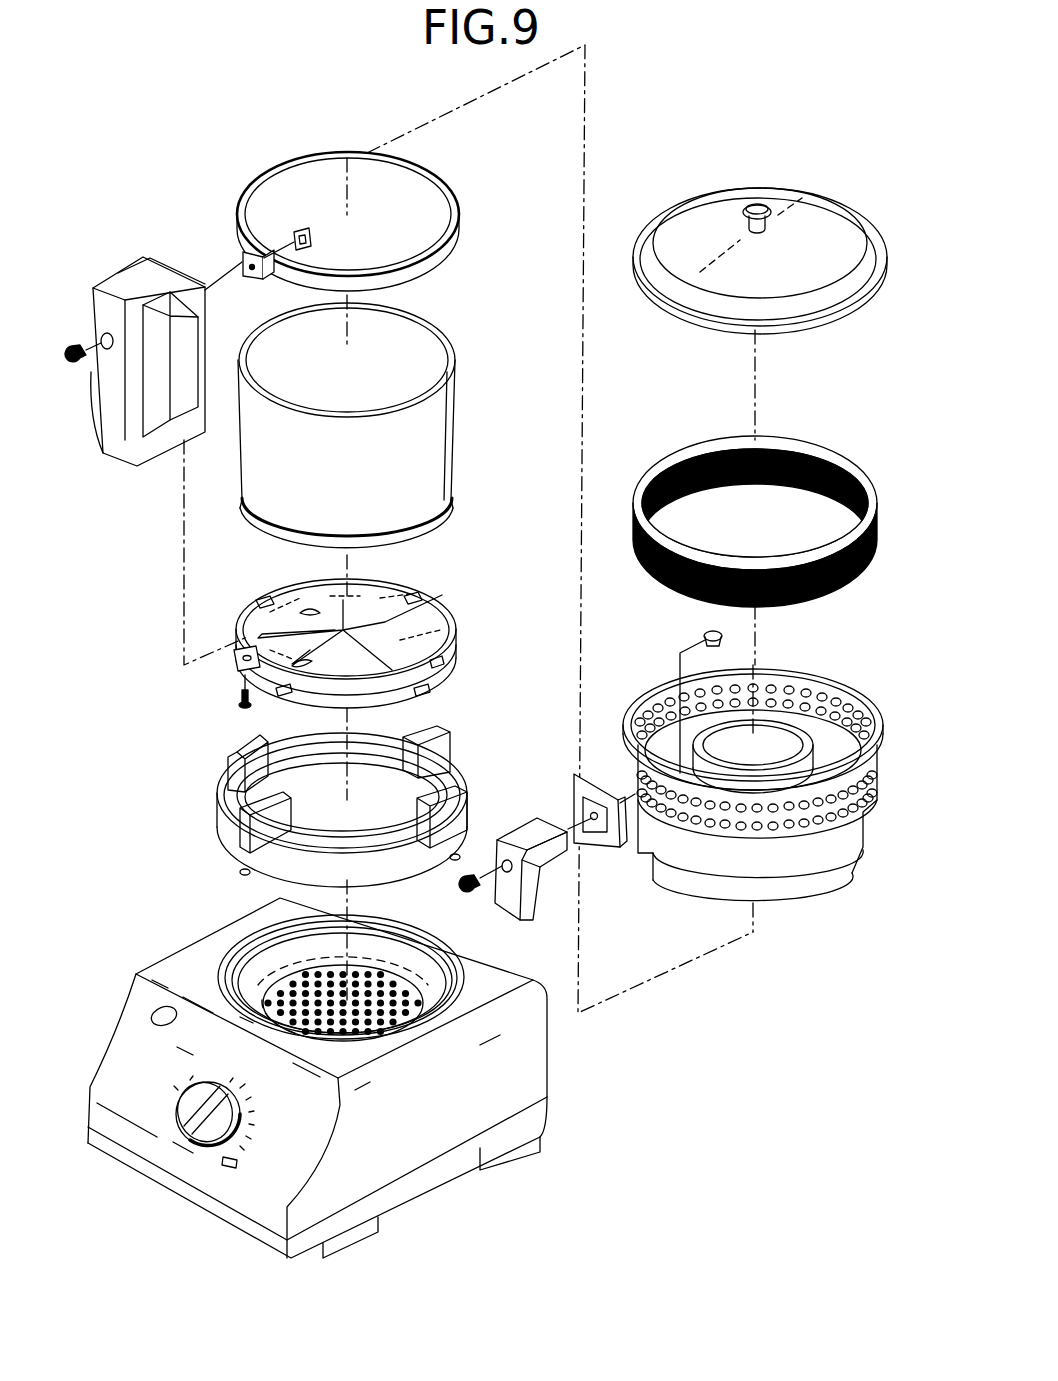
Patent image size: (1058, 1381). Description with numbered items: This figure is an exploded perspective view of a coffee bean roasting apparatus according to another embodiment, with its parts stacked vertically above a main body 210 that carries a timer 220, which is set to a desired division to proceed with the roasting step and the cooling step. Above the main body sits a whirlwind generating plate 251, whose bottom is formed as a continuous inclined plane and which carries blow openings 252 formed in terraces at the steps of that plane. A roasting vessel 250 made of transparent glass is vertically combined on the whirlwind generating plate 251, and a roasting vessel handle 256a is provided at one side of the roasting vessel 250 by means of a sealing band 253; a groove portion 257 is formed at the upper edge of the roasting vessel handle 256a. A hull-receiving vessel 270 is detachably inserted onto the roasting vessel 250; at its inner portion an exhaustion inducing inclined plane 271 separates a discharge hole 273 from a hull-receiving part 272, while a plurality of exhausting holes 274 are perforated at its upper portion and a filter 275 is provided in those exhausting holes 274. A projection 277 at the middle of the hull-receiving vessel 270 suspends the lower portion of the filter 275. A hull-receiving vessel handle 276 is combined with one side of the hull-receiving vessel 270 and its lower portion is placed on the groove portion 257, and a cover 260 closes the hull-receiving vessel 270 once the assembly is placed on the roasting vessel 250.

The main body 210 is at (362, 1078).
The timer 220 is at (172, 1097).
The roasting vessel 250 is at (432, 462).
The whirlwind generating plate 251 is at (374, 622).
The blow openings 252 is at (288, 635).
The sealing band 253 is at (453, 227).
The roasting vessel handle 256a is at (103, 432).
The groove portion 257 is at (117, 288).
The cover 260 is at (705, 208).
The hull-receiving vessel 270 is at (741, 797).
The exhaustion inducing inclined plane 271 is at (772, 720).
The hull-receiving part 272 is at (833, 760).
The discharge hole 273 is at (777, 743).
The exhausting holes 274 is at (680, 807).
The filter 275 is at (640, 546).
The hull-receiving vessel handle 276 is at (502, 905).
The projection 277 is at (673, 737).